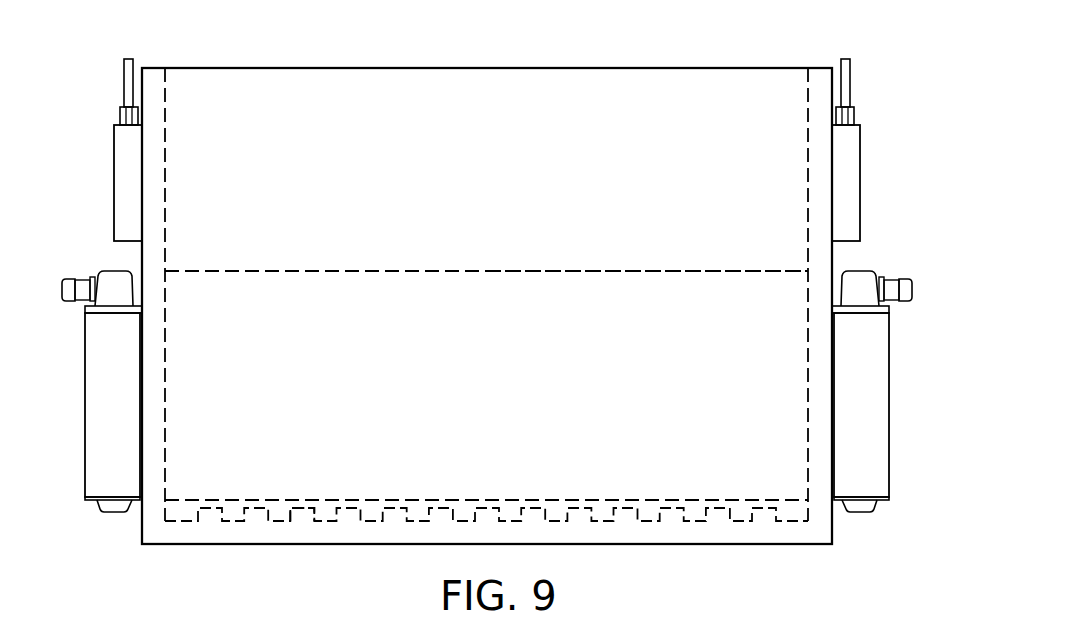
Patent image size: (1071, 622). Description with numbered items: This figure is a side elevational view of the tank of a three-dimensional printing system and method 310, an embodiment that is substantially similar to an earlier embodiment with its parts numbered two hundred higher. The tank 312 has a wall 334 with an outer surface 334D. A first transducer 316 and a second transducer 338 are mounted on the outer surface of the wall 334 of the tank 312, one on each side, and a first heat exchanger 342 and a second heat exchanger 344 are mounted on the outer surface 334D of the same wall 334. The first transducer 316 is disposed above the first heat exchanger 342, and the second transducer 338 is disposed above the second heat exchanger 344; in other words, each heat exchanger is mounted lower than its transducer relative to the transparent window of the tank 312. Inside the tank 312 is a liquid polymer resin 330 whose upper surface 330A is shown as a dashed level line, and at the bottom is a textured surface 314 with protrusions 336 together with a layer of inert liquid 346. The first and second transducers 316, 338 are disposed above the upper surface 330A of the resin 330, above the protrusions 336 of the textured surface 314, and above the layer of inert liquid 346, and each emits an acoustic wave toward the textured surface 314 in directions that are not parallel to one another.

The 3D printing system and method 310 is at (150, 34).
The tank 312 is at (350, 68).
The textured surface 314 is at (413, 520).
The first transducer 316 is at (114, 153).
The liquid polymer resin 330 is at (405, 270).
The upper surface of the resin 330A is at (580, 270).
The wall 334 is at (833, 257).
The outer surface 334D is at (141, 258).
The protrusions 336 is at (297, 505).
The second transducer 338 is at (858, 155).
The first heat exchanger 342 is at (85, 455).
The second heat exchanger 344 is at (887, 455).
The layer of inert liquid 346 is at (637, 500).